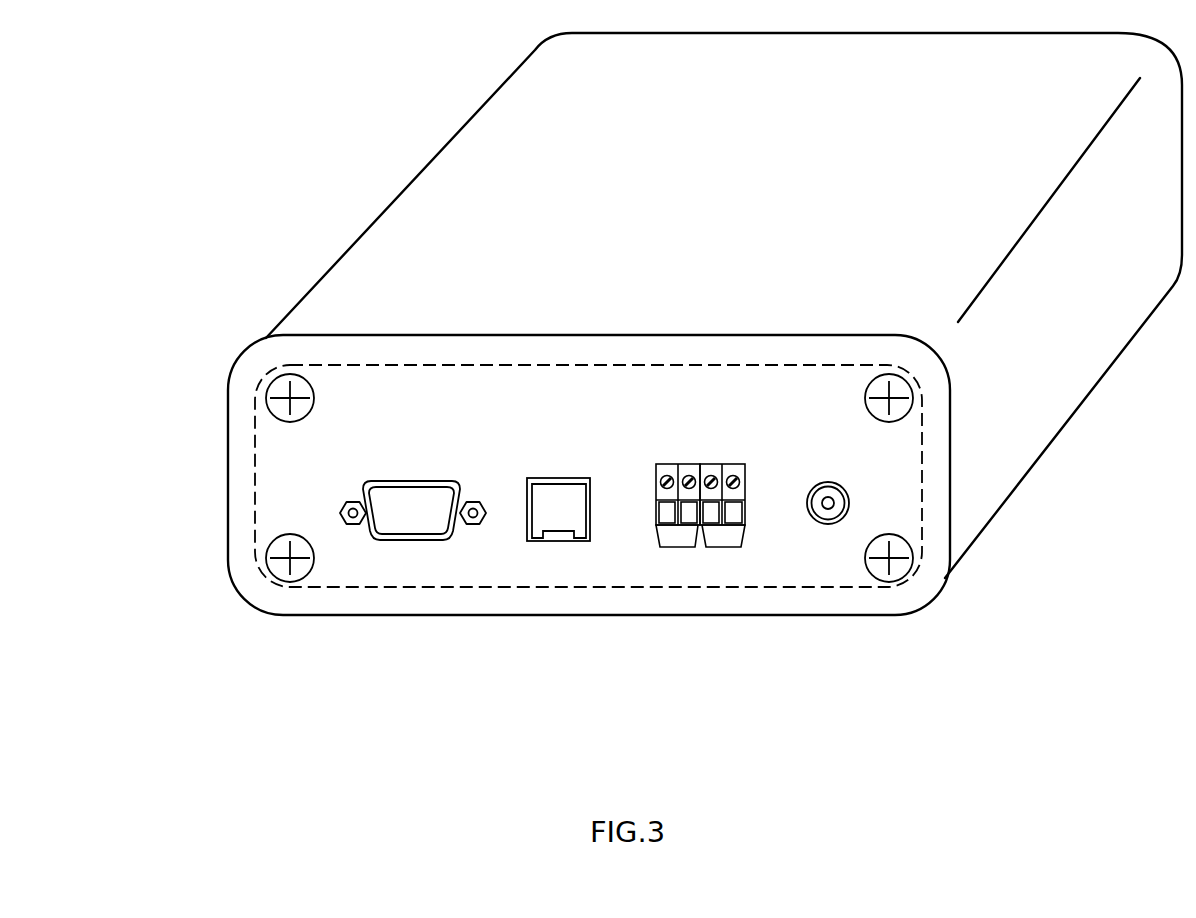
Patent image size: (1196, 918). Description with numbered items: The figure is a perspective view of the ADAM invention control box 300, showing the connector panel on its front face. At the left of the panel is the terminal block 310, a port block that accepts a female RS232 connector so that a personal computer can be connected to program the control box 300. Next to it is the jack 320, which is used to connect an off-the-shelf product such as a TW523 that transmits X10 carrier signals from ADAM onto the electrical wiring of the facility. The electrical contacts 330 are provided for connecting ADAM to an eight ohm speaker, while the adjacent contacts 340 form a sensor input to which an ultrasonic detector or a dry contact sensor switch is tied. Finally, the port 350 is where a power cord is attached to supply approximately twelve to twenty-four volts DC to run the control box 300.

The control box 300 is at (255, 145).
The terminal block 310 is at (324, 593).
The jack 320 is at (481, 377).
The electrical contacts 330 is at (608, 594).
The contacts 340 is at (781, 594).
The port 350 is at (727, 326).